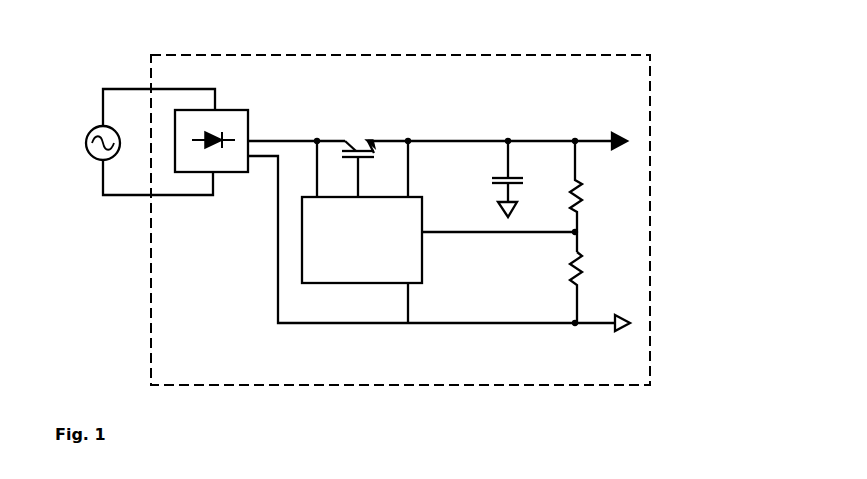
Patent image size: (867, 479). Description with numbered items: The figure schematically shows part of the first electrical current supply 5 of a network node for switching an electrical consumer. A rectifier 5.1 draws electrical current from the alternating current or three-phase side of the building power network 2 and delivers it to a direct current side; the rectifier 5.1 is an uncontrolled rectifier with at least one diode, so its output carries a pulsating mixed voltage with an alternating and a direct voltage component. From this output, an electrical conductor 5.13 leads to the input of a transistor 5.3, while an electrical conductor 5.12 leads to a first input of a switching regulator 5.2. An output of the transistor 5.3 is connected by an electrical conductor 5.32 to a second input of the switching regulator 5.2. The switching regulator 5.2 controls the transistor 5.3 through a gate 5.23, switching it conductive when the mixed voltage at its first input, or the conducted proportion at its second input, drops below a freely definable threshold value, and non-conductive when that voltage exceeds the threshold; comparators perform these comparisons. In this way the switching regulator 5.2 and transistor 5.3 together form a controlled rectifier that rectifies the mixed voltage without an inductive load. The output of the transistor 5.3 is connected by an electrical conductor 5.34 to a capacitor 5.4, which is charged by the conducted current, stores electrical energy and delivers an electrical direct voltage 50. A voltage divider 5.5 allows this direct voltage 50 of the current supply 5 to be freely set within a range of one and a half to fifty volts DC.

The first electrical current supply 5 is at (143, 75).
The building power network 2 is at (97, 158).
The rectifier 5.1 is at (233, 120).
The electrical conductor 5.12 is at (313, 165).
The electrical conductor 5.13 is at (319, 139).
The switching regulator 5.2 is at (440, 260).
The gate 5.23 is at (378, 158).
The transistor 5.3 is at (367, 146).
The electrical conductor 5.32 is at (409, 140).
The electrical conductor 5.34 is at (527, 80).
The capacitor 5.4 is at (517, 172).
The voltage divider 5.5 is at (602, 200).
The electrical direct voltage 50 is at (615, 280).